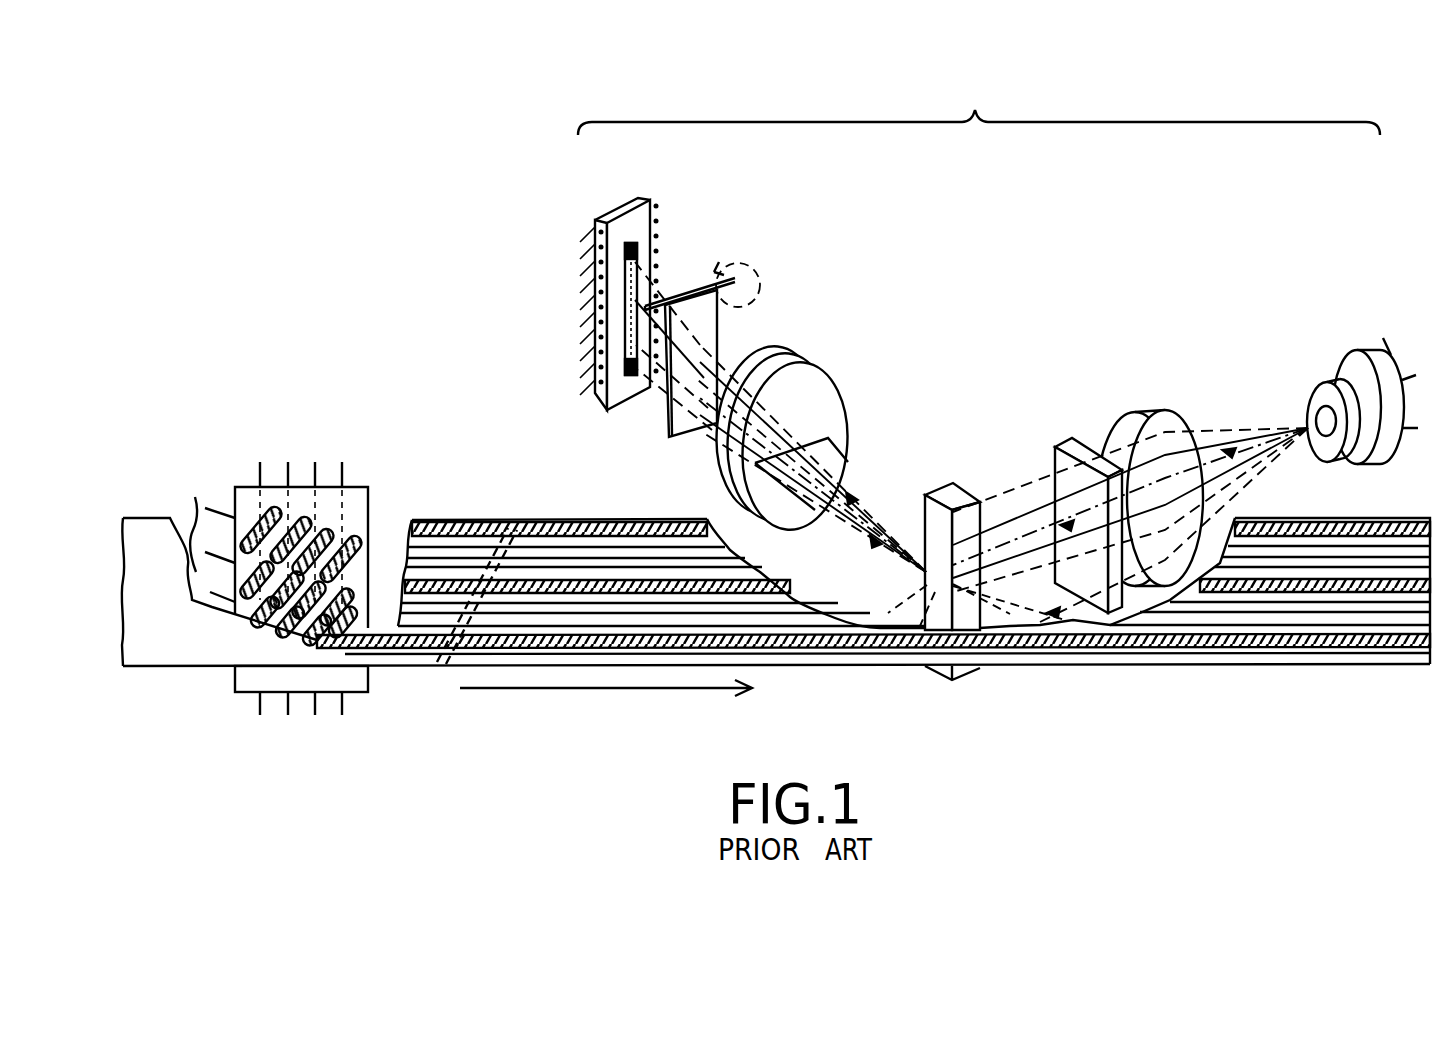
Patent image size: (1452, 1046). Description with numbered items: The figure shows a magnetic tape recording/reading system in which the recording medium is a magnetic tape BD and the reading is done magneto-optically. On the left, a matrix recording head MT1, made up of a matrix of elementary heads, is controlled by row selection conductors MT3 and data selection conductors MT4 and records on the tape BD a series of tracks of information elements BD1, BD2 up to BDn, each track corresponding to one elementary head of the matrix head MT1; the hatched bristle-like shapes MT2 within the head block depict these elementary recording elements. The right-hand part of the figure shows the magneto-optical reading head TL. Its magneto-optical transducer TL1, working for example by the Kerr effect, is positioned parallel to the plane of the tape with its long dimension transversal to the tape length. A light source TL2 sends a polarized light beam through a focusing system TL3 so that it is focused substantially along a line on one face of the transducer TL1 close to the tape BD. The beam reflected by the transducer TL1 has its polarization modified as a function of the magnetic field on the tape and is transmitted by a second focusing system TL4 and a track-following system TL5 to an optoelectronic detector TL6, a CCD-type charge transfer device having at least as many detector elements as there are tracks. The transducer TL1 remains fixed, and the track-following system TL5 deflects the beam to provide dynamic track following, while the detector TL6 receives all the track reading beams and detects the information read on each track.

The magneto-optical reading head TL is at (998, 396).
The magneto-optical transducer TL1 is at (972, 672).
The light source TL2 is at (1325, 385).
The focusing system TL3 is at (1150, 388).
The focusing system TL4 is at (830, 375).
The track-following system TL5 is at (742, 302).
The optoelectronic detector TL6 is at (690, 183).
The matrix recording head MT1 is at (365, 487).
The bristles MT2 is at (345, 532).
The row selection conductors MT3 is at (348, 443).
The data selection conductors MT4 is at (190, 547).
The magnetic tape BD is at (183, 648).
The track of information elements BD1 is at (440, 650).
The track of information elements BD2 is at (505, 665).
The track of information elements BDn is at (530, 520).